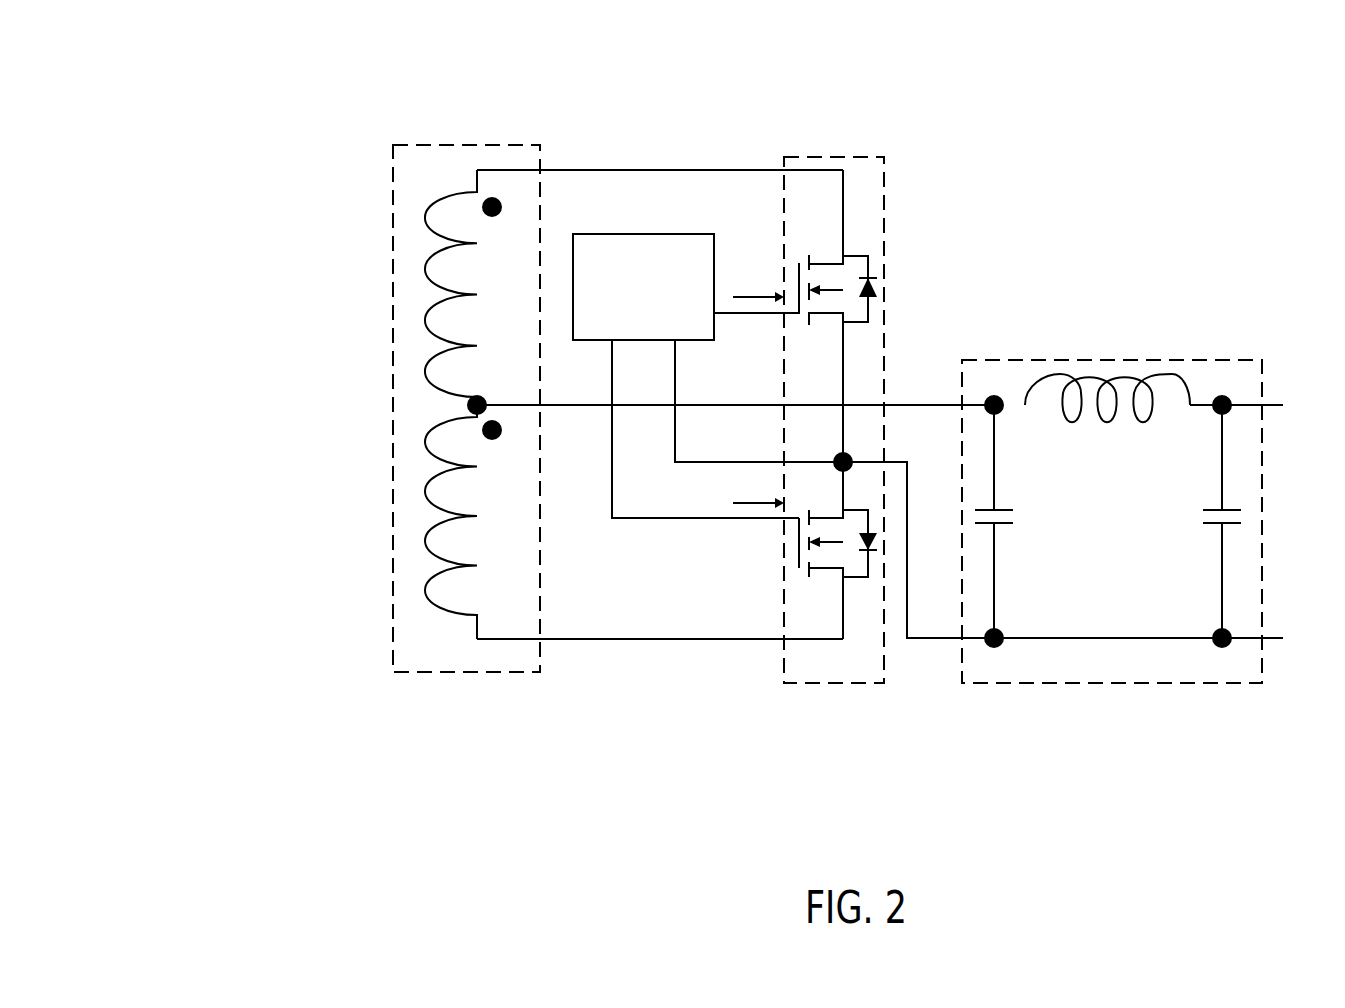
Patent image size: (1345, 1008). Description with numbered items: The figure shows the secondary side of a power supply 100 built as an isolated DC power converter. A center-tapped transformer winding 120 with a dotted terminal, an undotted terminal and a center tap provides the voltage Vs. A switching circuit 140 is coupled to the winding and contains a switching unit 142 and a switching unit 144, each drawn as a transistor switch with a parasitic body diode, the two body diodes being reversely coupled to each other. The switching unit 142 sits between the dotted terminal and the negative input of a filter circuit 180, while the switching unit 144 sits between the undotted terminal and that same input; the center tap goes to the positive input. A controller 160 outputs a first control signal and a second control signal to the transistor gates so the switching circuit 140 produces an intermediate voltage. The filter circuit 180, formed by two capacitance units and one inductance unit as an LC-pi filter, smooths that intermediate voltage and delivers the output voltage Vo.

The power supply 100 is at (161, 29).
The transformer winding 120 is at (470, 142).
The switching circuit 140 is at (850, 155).
The switching unit 142 is at (868, 268).
The switching unit 144 is at (799, 543).
The controller 160 is at (627, 318).
The filter circuit 180 is at (1135, 362).